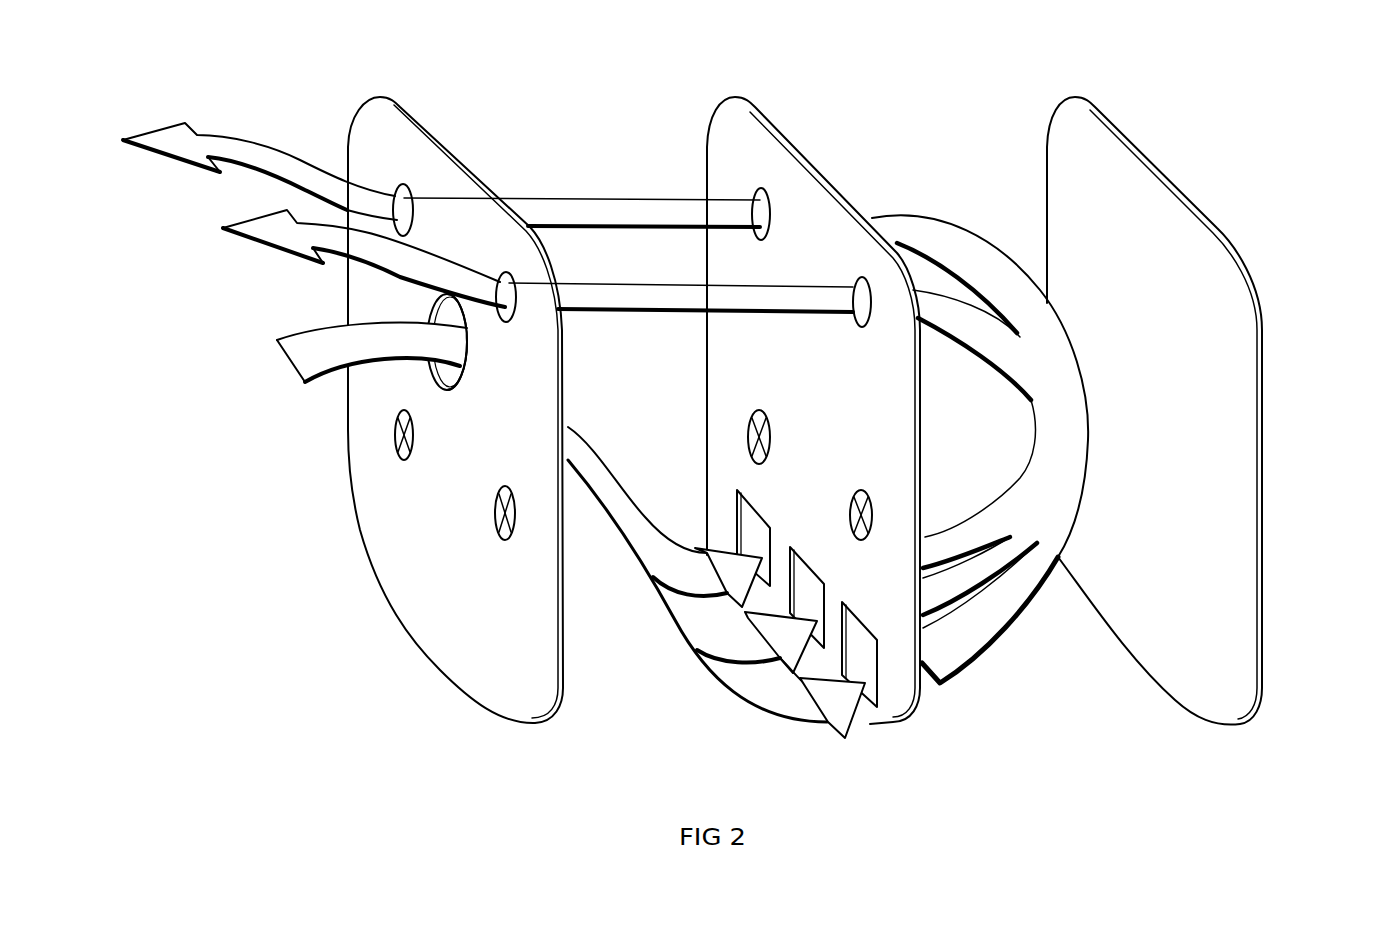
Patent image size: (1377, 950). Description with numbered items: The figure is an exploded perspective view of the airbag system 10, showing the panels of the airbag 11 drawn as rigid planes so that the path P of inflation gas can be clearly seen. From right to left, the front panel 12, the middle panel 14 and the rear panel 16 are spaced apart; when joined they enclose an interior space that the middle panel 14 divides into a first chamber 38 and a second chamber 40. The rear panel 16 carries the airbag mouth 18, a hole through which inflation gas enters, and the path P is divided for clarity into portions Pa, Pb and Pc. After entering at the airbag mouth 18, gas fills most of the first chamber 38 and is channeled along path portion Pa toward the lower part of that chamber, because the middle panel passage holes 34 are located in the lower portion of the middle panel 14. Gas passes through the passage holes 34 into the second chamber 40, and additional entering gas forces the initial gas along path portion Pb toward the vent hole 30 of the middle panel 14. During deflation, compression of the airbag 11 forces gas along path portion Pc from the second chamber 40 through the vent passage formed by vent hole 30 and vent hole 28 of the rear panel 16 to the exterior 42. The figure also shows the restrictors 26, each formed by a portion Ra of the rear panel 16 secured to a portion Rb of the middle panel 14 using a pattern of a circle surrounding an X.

The system 10 is at (920, 68).
The airbag 11 is at (785, 104).
The front panel 12 is at (1237, 512).
The middle panel 14 is at (733, 113).
The rear panel 16 is at (397, 112).
The airbag mouth 18 is at (427, 373).
The restrictor 26 is at (375, 510).
The vent hole 28 is at (400, 188).
The vent hole 30 is at (757, 187).
The middle panel passage hole 34 is at (750, 527).
The first chamber 38 is at (643, 385).
The second chamber 40 is at (980, 449).
The exterior 42 is at (108, 152).
The path P is at (227, 140).
The path portion Pa is at (630, 547).
The path portion Pb is at (1002, 620).
The path portion Pc is at (637, 205).
The restrictor portion Ra is at (410, 435).
The restrictor portion Rb is at (770, 440).